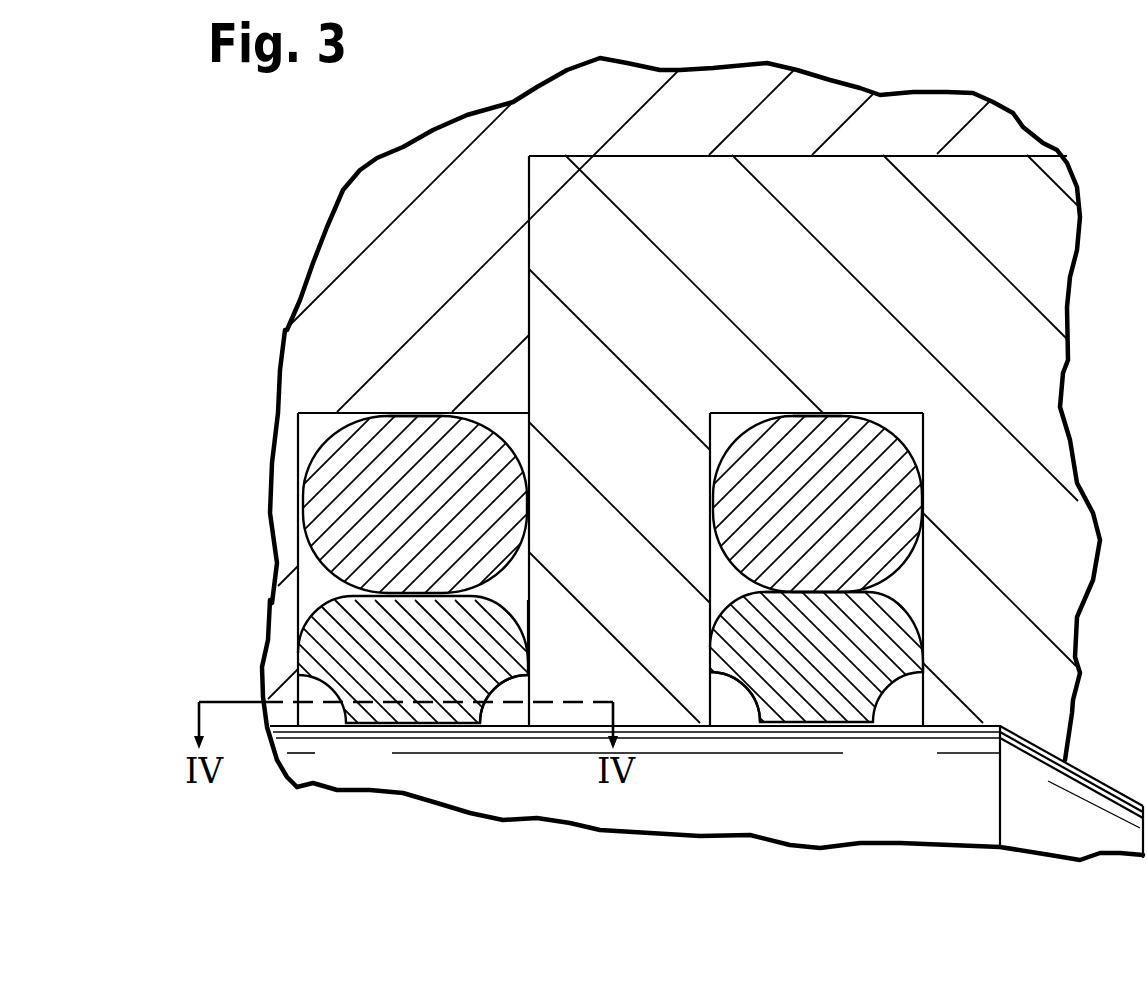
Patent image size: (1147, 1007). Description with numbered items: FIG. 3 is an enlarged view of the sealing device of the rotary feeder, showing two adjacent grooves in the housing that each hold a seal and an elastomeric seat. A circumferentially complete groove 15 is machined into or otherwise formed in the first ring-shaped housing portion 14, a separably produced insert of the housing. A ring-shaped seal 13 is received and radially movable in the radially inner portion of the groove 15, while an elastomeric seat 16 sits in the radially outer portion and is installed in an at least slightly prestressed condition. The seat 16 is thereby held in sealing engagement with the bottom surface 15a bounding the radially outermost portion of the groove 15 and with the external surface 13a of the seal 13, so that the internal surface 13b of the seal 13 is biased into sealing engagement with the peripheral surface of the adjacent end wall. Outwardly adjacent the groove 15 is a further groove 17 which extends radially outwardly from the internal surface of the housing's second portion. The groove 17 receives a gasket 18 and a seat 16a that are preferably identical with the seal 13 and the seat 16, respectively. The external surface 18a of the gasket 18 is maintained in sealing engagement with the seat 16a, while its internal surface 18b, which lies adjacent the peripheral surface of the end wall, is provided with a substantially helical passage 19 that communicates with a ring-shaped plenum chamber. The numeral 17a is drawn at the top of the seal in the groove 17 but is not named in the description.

The ring-shaped seal 13 is at (912, 613).
The external surface of the seal 13a is at (787, 592).
The internal surface of the seal 13b is at (817, 726).
The first ring-shaped housing portion 14 is at (700, 154).
The groove 15 is at (925, 578).
The bottom surface of the groove 15a is at (830, 413).
The elastomeric seat 16 is at (907, 442).
The seat 16a is at (313, 450).
The further groove 17 is at (290, 585).
The top surface of O-ring 17a is at (418, 412).
The gasket 18 is at (318, 612).
The external surface of the gasket 18a is at (530, 563).
The internal surface of the gasket 18b is at (402, 726).
The substantially helical passage 19 is at (505, 715).